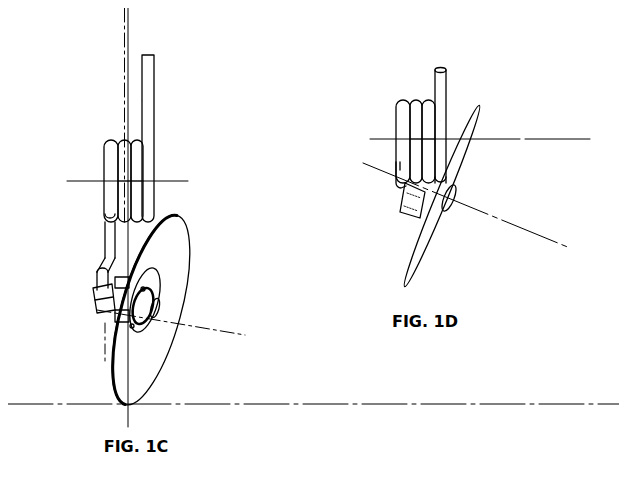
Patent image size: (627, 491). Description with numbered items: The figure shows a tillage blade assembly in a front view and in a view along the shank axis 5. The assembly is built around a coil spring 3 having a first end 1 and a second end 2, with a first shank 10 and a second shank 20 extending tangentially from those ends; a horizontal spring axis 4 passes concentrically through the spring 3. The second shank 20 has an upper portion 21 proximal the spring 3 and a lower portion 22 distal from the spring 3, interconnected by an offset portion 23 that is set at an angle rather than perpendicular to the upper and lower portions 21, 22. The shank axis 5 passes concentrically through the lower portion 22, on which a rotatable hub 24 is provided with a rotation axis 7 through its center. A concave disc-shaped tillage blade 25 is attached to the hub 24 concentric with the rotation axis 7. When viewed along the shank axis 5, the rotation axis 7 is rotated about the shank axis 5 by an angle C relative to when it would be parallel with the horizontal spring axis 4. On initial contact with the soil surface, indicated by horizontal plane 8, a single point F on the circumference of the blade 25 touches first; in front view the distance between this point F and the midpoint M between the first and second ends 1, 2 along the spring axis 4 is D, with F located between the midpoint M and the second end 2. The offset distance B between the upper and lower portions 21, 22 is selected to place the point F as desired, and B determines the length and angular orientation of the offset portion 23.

In FIG. 1C, the first end 1 is at (184, 132).
In FIG. 1D, the first end 1 is at (483, 87).
In FIG. 1C, the second end 2 is at (97, 163).
In FIG. 1D, the second end 2 is at (386, 130).
In FIG. 1C, the coil spring 3 is at (137, 198).
In FIG. 1D, the coil spring 3 is at (399, 94).
In FIG. 1C, the horizontal spring axis 4 is at (152, 157).
In FIG. 1D, the horizontal spring axis 4 is at (488, 114).
In FIG. 1C, the shank axis 5 is at (78, 358).
In FIG. 1C, the rotation axis 7 is at (187, 318).
In FIG. 1D, the rotation axis 7 is at (466, 229).
In FIG. 1C, the horizontal plane 8 is at (313, 427).
In FIG. 1C, the first shank 10 is at (185, 128).
In FIG. 1D, the first shank 10 is at (470, 103).
In FIG. 1C, the second shank 20 is at (69, 247).
In FIG. 1C, the upper portion 21 is at (107, 215).
In FIG. 1C, the lower portion 22 is at (69, 308).
In FIG. 1C, the offset portion 23 is at (65, 285).
In FIG. 1C, the rotatable hub 24 is at (157, 293).
In FIG. 1D, the rotatable hub 24 is at (407, 202).
In FIG. 1C, the tillage blade 25 is at (152, 363).
In FIG. 1D, the tillage blade 25 is at (410, 255).
In FIG. 1C, the distance D is at (82, 25).
In FIG. 1C, the midpoint M is at (179, 121).
In FIG. 1C, the offset distance B is at (150, 235).
In FIG. 1C, the initial point of contact F is at (164, 420).
In FIG. 1D, the angle C is at (577, 139).